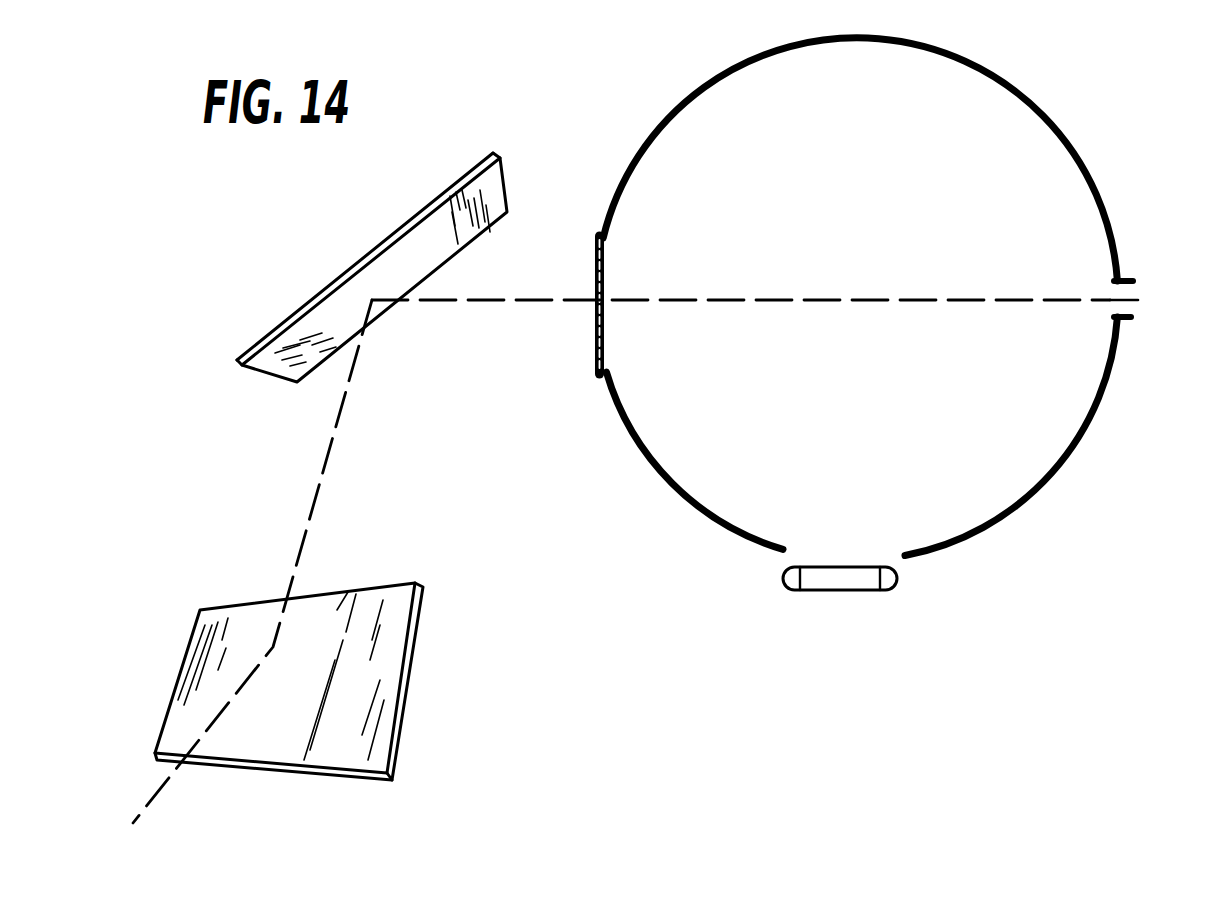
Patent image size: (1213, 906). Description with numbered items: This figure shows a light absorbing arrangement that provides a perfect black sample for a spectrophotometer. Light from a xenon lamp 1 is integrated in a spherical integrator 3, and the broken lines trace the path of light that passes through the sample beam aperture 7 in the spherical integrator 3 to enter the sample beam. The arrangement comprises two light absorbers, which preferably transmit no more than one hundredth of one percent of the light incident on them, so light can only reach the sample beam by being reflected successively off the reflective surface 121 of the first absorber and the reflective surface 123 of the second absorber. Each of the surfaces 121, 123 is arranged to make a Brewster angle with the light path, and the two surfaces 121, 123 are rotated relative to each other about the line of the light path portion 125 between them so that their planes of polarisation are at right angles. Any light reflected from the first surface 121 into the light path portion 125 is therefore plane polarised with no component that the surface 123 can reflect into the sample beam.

The xenon lamp 1 is at (875, 590).
The spherical integrator 3 is at (993, 80).
The sample beam aperture 7 is at (1133, 310).
The reflective surface 121 is at (308, 675).
The reflective surface 123 is at (427, 242).
The light path portion 125 is at (328, 458).